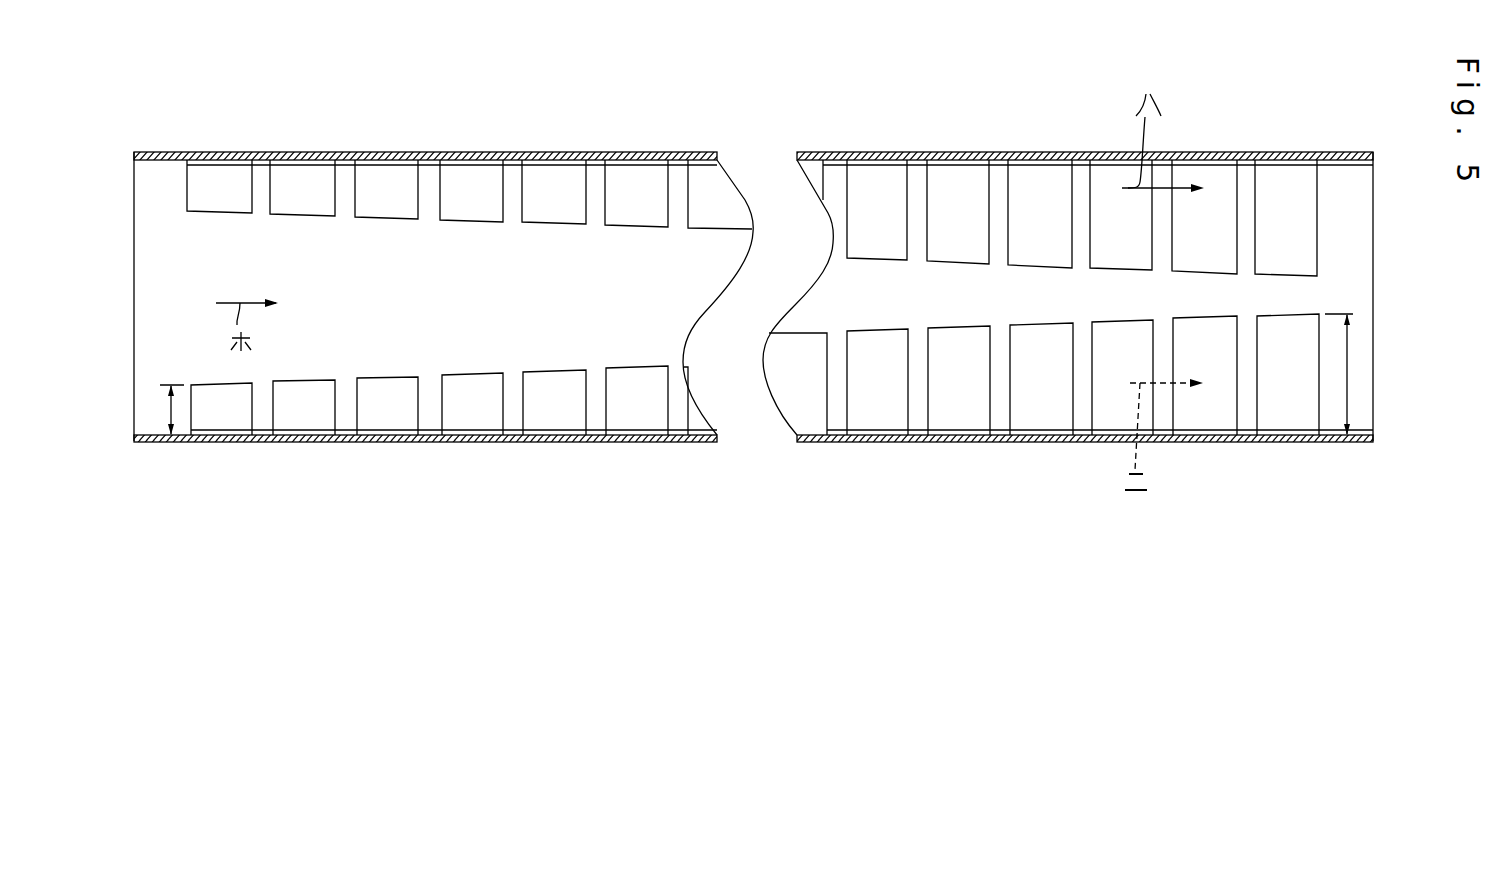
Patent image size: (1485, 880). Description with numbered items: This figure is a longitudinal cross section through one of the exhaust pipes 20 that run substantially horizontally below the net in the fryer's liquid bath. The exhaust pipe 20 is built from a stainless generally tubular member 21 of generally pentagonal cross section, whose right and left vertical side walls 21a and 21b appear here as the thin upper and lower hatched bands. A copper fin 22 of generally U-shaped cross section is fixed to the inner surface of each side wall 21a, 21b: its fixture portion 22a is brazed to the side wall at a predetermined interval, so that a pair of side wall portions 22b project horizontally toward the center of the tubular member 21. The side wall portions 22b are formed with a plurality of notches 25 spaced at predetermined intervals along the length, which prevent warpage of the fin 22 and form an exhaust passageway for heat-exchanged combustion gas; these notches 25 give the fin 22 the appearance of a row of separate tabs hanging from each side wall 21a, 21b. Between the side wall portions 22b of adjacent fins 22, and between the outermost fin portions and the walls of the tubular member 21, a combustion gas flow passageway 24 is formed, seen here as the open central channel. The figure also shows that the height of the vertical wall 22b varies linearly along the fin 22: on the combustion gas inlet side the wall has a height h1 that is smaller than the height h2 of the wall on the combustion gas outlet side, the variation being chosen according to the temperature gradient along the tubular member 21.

The exhaust pipe 20 is at (1253, 125).
The tubular member 21 is at (852, 445).
The vertical side wall 21a is at (641, 152).
The vertical side wall 21b is at (682, 442).
The fin 22 is at (322, 439).
The fixture portion 22a is at (968, 162).
The side wall portion 22b is at (222, 431).
The combustion gas flow passageway 24 is at (376, 270).
The notch 25 is at (519, 172).
The height of vertical wall on combustion gas inlet side h1 is at (172, 413).
The height of vertical wall on combustion gas outlet side h2 is at (1350, 407).